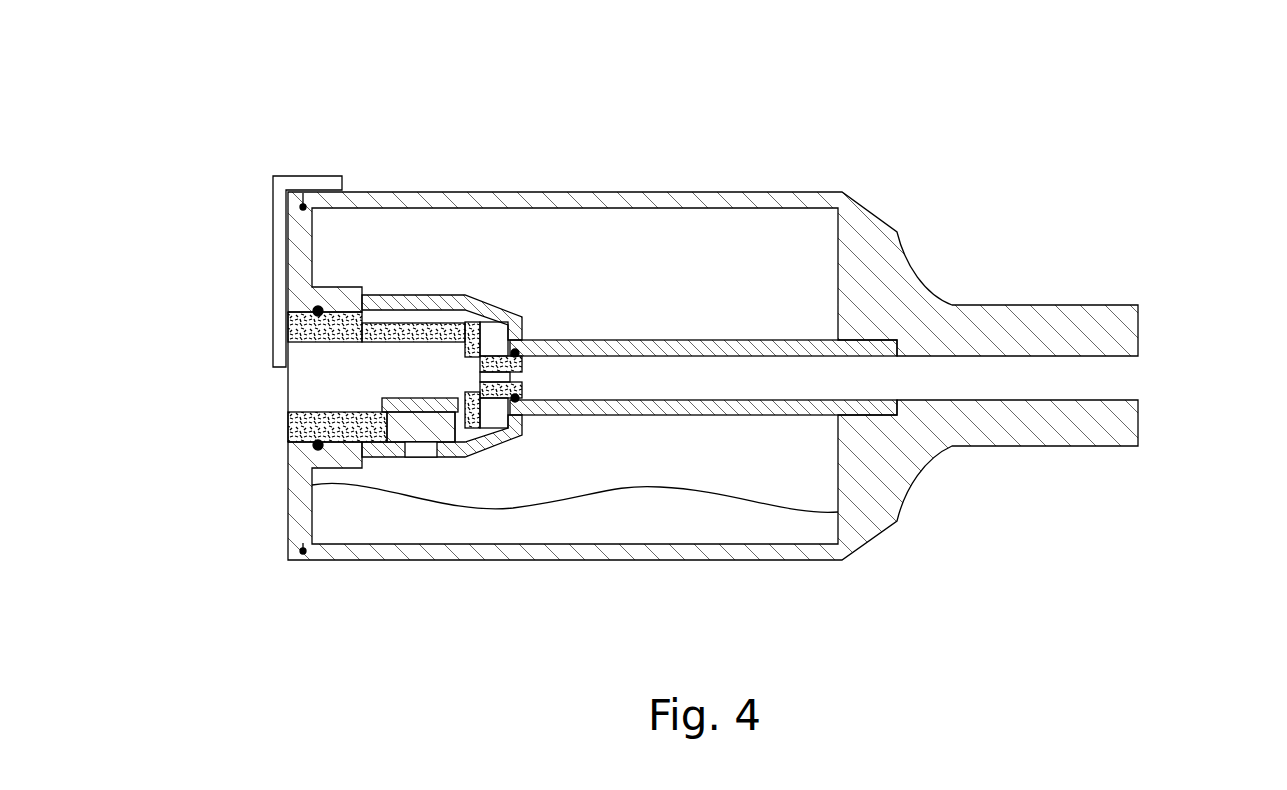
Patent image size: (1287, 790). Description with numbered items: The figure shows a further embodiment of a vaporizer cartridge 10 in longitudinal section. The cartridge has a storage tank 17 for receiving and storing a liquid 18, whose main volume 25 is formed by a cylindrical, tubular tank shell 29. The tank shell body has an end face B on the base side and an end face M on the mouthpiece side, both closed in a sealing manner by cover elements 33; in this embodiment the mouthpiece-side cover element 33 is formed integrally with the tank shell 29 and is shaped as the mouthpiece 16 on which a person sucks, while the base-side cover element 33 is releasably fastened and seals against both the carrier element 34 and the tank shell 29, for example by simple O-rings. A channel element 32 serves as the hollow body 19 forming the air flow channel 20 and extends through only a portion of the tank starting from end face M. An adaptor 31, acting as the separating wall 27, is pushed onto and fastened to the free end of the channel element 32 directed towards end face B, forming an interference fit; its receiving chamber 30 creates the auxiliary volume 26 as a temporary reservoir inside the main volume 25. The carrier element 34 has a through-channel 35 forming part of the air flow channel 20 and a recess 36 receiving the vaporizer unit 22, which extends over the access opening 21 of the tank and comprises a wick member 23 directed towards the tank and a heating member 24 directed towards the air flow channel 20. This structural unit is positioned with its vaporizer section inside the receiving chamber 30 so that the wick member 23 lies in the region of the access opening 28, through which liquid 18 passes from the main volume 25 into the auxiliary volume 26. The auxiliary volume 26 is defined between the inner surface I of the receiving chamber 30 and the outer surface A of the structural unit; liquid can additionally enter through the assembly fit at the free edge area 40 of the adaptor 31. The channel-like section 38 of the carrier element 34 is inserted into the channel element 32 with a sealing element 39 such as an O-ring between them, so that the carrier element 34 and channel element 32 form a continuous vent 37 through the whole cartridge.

The vaporizer cartridge 10 is at (849, 88).
The mouthpiece 16 is at (1092, 303).
The storage tank 17 is at (612, 235).
The liquid 18 is at (513, 437).
The hollow body 19 is at (707, 367).
The air flow channel 20 is at (762, 337).
The access opening 21 is at (387, 414).
The vaporizer unit 22 is at (392, 300).
The wick member 23 is at (388, 455).
The heating member 24 is at (405, 385).
The main volume 25 is at (650, 321).
The auxiliary volume 26 is at (508, 335).
The separating wall 27 is at (522, 316).
The access opening 28 is at (428, 455).
The tank shell 29 is at (690, 193).
The receiving chamber 30 is at (493, 338).
The adaptor 31 is at (478, 436).
The channel element 32 is at (752, 415).
The cover element 33 is at (270, 533).
The carrier element 34 is at (300, 328).
The through-channel 35 is at (300, 380).
The recess 36 is at (318, 445).
The vent 37 is at (1086, 378).
The channel-like section 38 is at (516, 352).
The sealing element 39 is at (515, 400).
The free edge area 40 is at (378, 296).
The outer surface A is at (445, 311).
The end face on the base side B is at (250, 302).
The inner surface I is at (458, 322).
The end face on the mouthpiece side M is at (1055, 220).